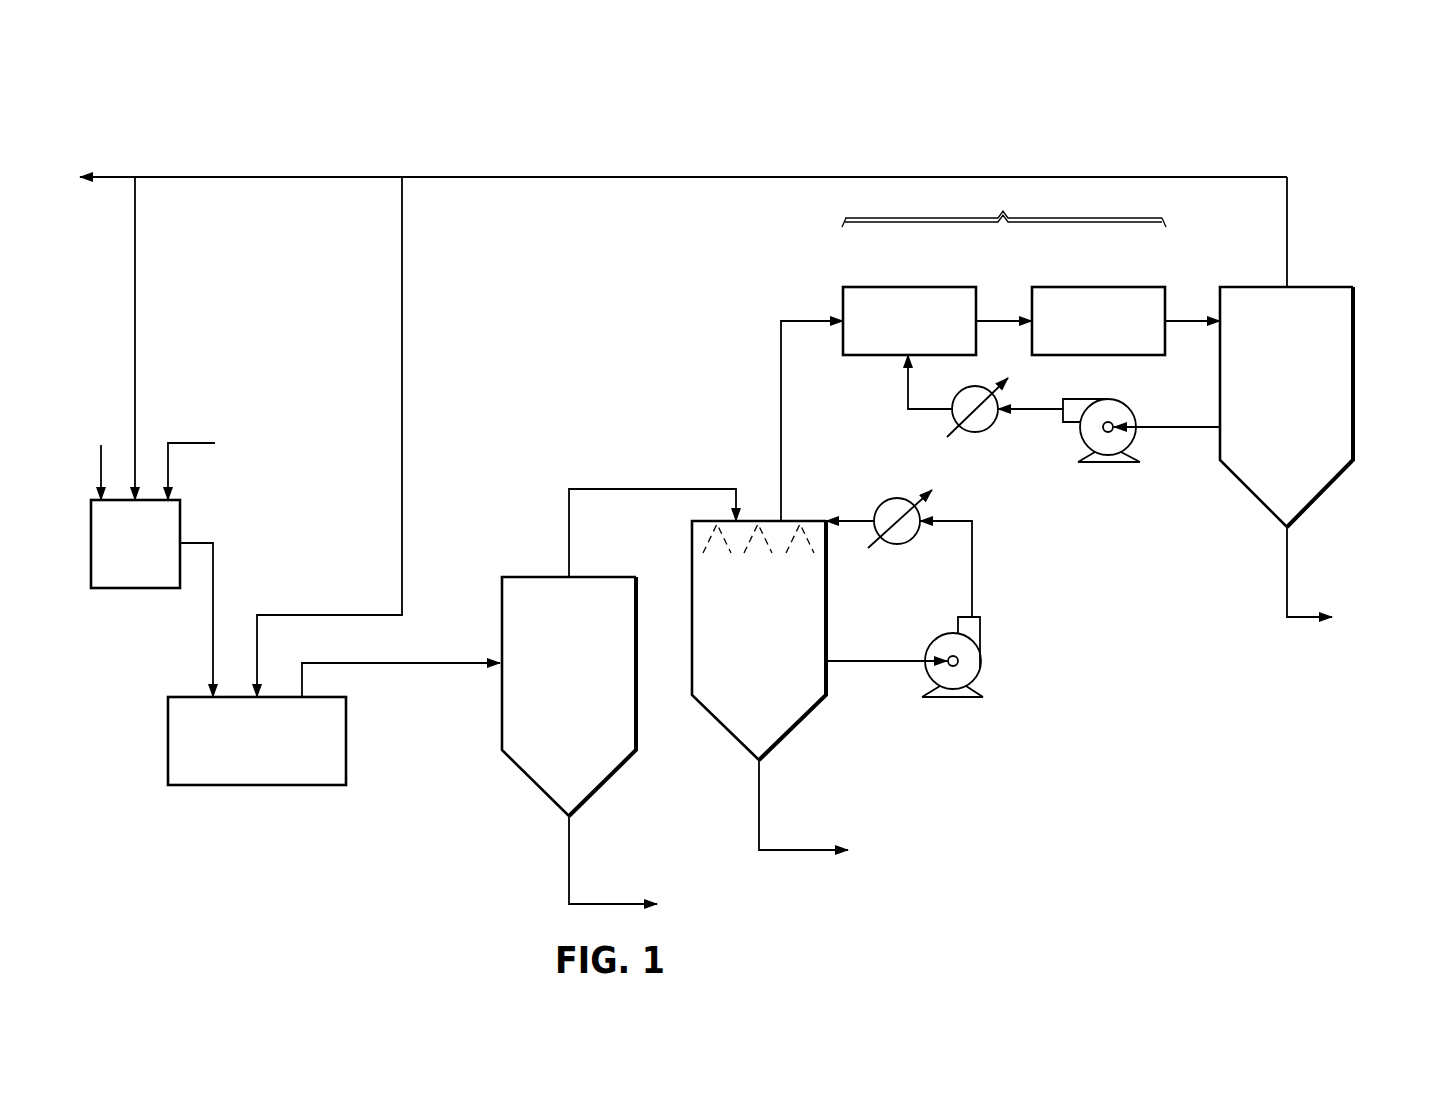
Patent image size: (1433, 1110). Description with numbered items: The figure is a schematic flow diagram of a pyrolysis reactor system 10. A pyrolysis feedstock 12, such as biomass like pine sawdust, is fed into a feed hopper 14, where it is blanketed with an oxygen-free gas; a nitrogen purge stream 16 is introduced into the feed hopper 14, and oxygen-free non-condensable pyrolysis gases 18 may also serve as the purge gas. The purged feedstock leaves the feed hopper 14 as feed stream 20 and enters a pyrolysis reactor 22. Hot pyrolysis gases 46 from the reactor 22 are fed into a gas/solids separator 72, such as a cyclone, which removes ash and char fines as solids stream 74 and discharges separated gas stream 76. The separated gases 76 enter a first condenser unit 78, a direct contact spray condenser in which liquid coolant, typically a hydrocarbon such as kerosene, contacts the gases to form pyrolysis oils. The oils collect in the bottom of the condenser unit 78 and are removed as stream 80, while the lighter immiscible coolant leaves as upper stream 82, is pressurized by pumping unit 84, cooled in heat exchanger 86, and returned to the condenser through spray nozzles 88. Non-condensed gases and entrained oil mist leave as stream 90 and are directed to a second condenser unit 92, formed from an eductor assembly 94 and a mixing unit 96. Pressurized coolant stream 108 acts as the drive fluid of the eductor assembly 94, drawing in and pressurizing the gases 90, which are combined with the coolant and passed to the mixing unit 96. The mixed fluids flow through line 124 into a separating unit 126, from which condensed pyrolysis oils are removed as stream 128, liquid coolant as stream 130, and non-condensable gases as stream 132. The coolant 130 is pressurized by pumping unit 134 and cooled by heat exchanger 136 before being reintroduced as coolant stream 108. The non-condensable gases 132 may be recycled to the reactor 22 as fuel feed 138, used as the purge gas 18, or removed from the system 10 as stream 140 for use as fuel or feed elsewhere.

The system 10 is at (1113, 117).
The pyrolysis feedstock 12 is at (95, 446).
The feed hopper 14 is at (118, 588).
The nitrogen purge stream 16 is at (190, 441).
The non-condensable pyrolysis gases 18 is at (135, 237).
The feed stream 20 is at (213, 645).
The pyrolysis reactor 22 is at (232, 785).
The hot pyrolysis gases 46 is at (422, 667).
The gas/solids separator 72 is at (540, 788).
The solids stream 74 is at (569, 862).
The separated gas stream 76 is at (569, 532).
The first condenser unit 78 is at (725, 728).
The pyrolysis oil stream 80 is at (757, 805).
The upper stream of liquid coolant 82 is at (876, 664).
The pumping unit 84 is at (985, 640).
The heat exchanger 86 is at (895, 545).
The spray nozzles 88 is at (790, 537).
The non-condensed pyrolysis gas stream 90 is at (782, 423).
The second condenser unit 92 is at (1004, 203).
The eductor assembly 94 is at (920, 287).
The mixing unit 96 is at (1100, 287).
The coolant stream 108 is at (932, 412).
The line 124 is at (1183, 318).
The separating unit 126 is at (1353, 373).
The pyrolysis oil stream 128 is at (1287, 573).
The liquid coolant stream 130 is at (1168, 424).
The non-condensable gas stream 132 is at (1287, 233).
The pumping unit 134 is at (1110, 465).
The heat exchanger 136 is at (984, 432).
The fuel feed 138 is at (402, 420).
The non-condensable gas stream 140 is at (113, 177).